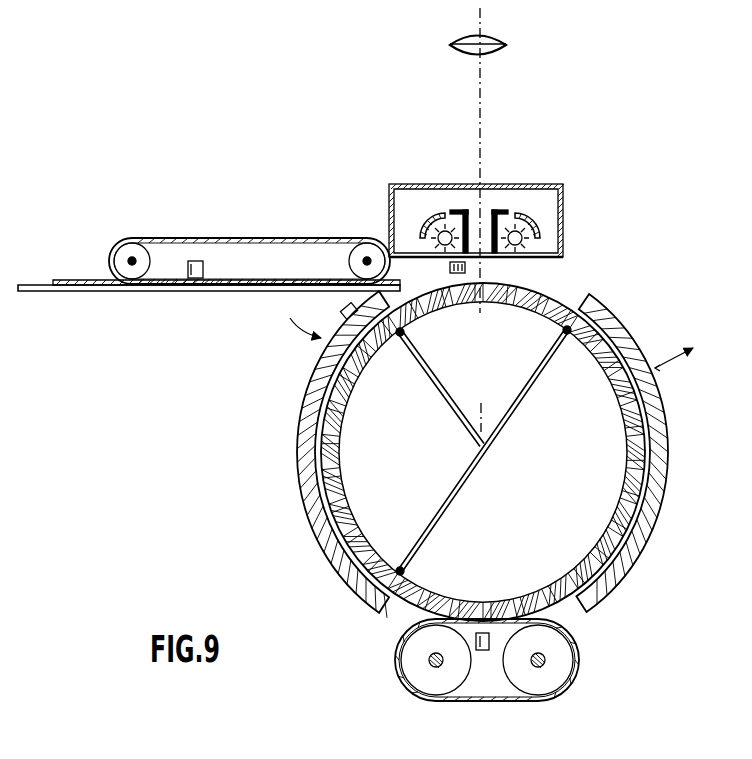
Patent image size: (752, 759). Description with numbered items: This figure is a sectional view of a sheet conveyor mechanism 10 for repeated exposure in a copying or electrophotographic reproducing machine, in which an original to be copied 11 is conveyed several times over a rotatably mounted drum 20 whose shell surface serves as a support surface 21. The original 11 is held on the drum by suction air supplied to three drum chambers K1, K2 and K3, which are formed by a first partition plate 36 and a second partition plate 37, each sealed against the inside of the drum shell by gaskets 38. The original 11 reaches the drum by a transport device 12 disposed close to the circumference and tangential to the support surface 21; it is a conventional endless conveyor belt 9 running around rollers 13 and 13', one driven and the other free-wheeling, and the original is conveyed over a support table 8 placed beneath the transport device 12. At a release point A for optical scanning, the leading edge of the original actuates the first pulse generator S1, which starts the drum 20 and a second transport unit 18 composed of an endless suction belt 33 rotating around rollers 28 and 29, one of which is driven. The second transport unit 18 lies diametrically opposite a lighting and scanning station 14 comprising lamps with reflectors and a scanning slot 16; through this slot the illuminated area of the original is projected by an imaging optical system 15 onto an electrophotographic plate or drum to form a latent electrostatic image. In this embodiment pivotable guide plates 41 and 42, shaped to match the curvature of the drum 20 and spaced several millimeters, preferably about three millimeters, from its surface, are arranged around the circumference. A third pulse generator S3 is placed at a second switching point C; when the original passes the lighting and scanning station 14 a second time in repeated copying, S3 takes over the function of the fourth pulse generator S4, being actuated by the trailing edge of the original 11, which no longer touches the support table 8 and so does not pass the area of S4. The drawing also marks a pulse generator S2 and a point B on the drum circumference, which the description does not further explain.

The support table 8 is at (88, 292).
The endless conveyor belt 9 is at (188, 240).
The sheet conveyor mechanism 10 is at (289, 417).
The original to be copied 11 is at (60, 281).
The transport device 12 is at (245, 233).
The roller 13 is at (126, 241).
The roller 13' is at (361, 240).
The lighting and scanning station 14 is at (504, 186).
The imaging optical system 15 is at (497, 38).
The scanning slot 16 is at (478, 224).
The second transport unit 18 is at (488, 688).
The drum 20 is at (618, 358).
The support surface 21 is at (651, 391).
The roller 28 is at (562, 668).
The roller 29 is at (412, 665).
The endless suction belt 33 is at (531, 702).
The first partition plate 36 is at (534, 375).
The second partition plate 37 is at (428, 381).
The gaskets 38 is at (406, 336).
The guide plate 41 is at (662, 463).
The guide plate 42 is at (300, 469).
The first pulse generator S1 is at (457, 275).
The sensor S2 is at (478, 650).
The third pulse generator S3 is at (342, 311).
The fourth pulse generator S4 is at (200, 279).
The release point A is at (456, 291).
The position B is at (478, 612).
The second switching point C is at (387, 349).
The drum chamber K1 is at (509, 369).
The drum chamber K2 is at (545, 517).
The drum chamber K3 is at (400, 459).